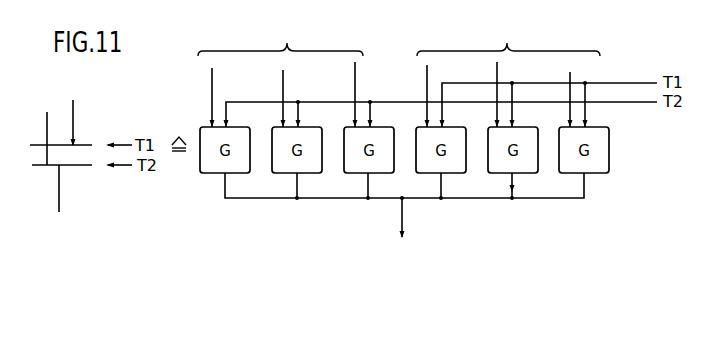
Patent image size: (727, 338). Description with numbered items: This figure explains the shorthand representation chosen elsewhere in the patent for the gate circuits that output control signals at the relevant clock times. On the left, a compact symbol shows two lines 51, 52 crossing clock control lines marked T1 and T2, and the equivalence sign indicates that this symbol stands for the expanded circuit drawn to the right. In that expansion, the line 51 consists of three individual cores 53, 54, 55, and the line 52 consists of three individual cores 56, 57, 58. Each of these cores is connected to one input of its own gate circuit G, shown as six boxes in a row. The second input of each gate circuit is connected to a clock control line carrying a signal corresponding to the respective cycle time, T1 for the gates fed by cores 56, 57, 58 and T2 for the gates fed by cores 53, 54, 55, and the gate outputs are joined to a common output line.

The line 51 is at (196, 94).
The line 52 is at (336, 84).
The individual core 53 is at (224, 97).
The individual core 54 is at (296, 98).
The individual core 55 is at (368, 94).
The individual core 56 is at (439, 96).
The individual core 57 is at (488, 91).
The individual core 58 is at (562, 91).